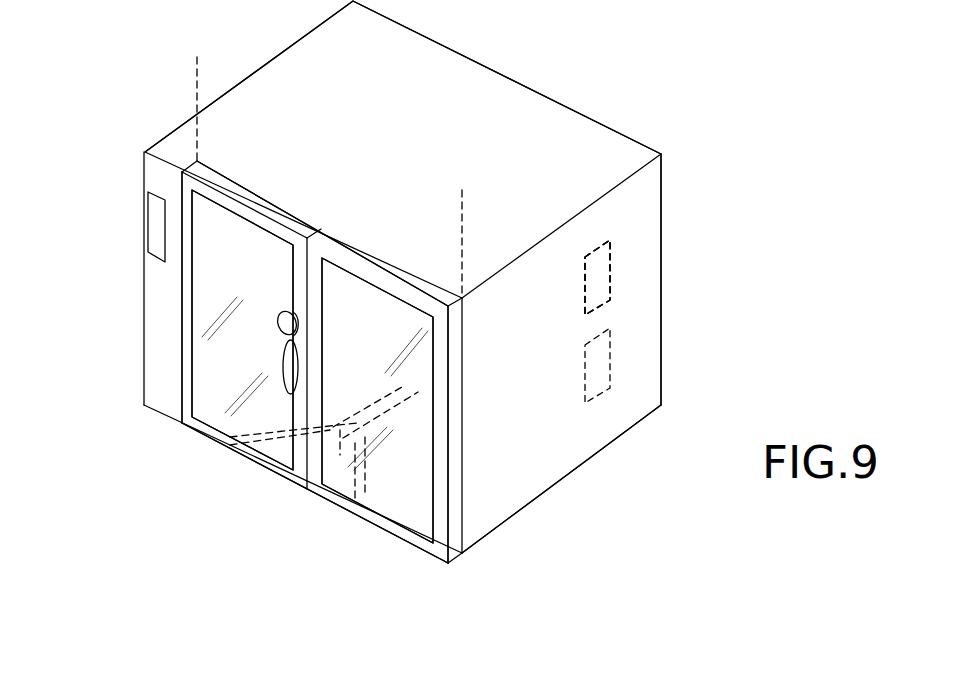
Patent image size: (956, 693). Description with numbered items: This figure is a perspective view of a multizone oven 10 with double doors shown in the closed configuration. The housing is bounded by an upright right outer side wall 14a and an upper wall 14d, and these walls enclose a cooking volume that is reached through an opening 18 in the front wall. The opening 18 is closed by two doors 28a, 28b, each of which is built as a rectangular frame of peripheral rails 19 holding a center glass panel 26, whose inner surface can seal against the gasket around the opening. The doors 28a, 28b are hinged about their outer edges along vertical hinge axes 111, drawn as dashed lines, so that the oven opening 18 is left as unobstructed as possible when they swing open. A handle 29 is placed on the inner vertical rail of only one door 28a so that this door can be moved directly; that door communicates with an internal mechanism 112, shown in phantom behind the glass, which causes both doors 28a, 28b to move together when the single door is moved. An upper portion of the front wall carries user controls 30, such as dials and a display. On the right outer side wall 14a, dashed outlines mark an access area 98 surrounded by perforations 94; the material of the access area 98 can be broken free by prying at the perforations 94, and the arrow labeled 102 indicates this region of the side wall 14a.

The multizone oven 10 is at (708, 91).
The upper wall 14d is at (555, 128).
The right outer side wall 14a is at (655, 275).
The vertical hinge axes 111 is at (197, 80).
The aperture 102 is at (623, 231).
The perforations 94 is at (610, 262).
The access area 98 is at (607, 287).
The opening 18 is at (122, 448).
The peripheral rails 19 is at (303, 215).
The glass panel 26 is at (332, 283).
The first door 28a is at (212, 413).
The second door 28b is at (393, 495).
The handle 29 is at (283, 355).
The user controls 30 is at (147, 227).
The internal mechanism 112 is at (330, 480).